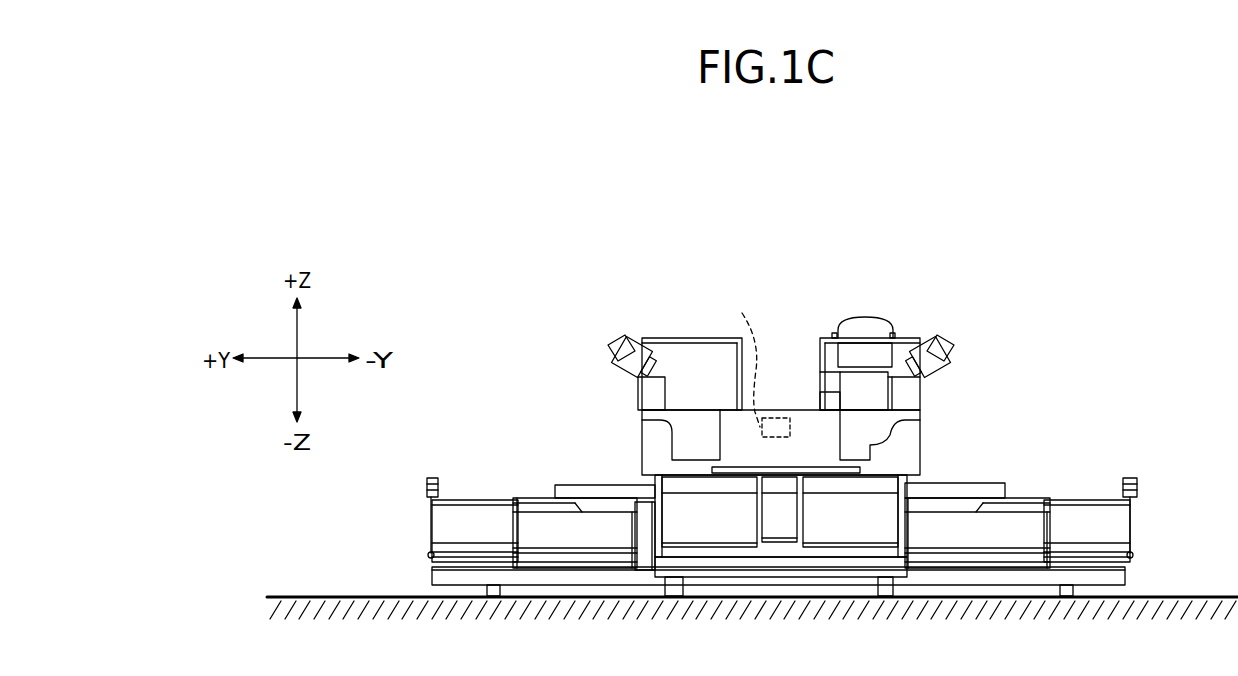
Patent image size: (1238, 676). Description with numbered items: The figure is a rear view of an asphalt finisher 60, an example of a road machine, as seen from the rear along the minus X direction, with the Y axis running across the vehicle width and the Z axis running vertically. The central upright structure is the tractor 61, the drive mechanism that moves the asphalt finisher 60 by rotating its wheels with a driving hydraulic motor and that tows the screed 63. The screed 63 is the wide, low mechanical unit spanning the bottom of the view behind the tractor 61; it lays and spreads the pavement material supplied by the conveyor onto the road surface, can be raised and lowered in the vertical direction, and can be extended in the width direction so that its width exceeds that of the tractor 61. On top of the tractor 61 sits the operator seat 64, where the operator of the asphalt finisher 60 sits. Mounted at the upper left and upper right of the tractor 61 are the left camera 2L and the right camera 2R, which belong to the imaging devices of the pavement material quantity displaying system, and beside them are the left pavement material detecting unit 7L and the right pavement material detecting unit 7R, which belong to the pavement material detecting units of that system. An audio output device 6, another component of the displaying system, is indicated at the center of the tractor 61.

The left camera 2L is at (610, 342).
The right camera 2R is at (950, 342).
The audio output device 6 is at (758, 365).
The left pavement material detecting unit 7L is at (641, 337).
The right pavement material detecting unit 7R is at (919, 337).
The asphalt finisher 60 is at (1125, 300).
The tractor 61 is at (776, 356).
The screed 63 is at (1142, 488).
The operator seat 64 is at (860, 317).